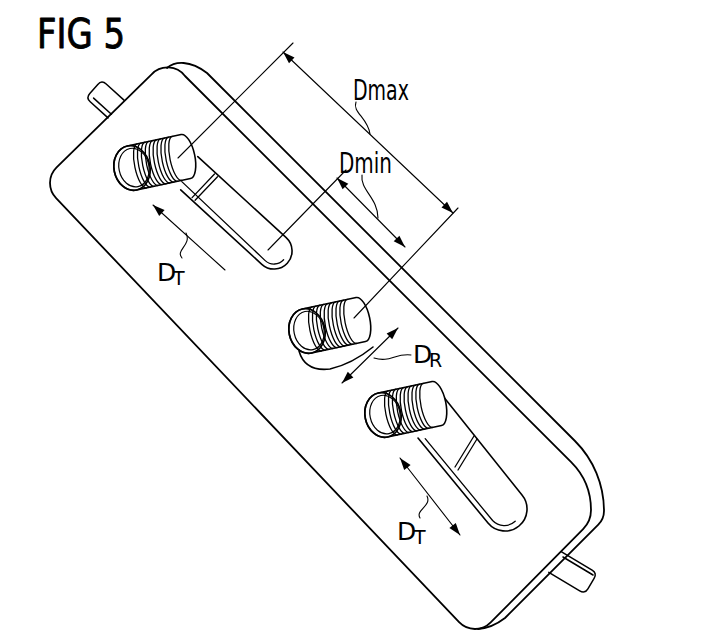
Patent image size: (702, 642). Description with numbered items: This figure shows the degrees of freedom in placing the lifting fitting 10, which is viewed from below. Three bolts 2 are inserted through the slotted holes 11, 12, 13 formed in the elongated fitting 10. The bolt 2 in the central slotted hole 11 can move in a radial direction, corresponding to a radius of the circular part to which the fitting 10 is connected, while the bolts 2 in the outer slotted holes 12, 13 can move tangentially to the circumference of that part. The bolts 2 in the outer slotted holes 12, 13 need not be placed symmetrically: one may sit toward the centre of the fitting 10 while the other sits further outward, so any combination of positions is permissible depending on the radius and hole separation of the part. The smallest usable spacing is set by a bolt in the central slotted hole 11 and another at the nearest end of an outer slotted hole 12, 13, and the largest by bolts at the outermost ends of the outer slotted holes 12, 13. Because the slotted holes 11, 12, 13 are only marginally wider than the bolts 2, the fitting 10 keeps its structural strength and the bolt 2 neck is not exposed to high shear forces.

The bolt 2 is at (127, 173).
The lifting fitting 10 is at (440, 247).
The central slotted hole 11 is at (350, 296).
The outer slotted hole 12 is at (270, 250).
The outer slotted hole 13 is at (506, 513).